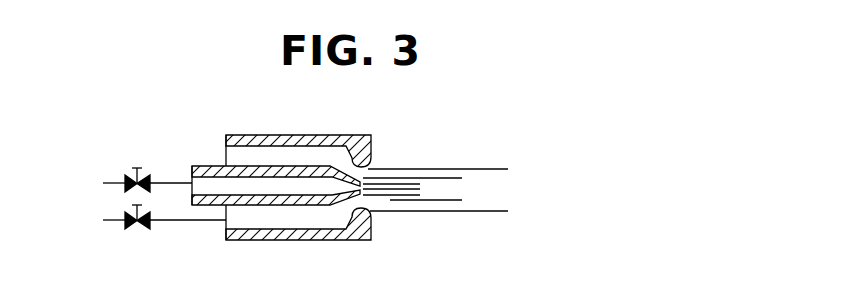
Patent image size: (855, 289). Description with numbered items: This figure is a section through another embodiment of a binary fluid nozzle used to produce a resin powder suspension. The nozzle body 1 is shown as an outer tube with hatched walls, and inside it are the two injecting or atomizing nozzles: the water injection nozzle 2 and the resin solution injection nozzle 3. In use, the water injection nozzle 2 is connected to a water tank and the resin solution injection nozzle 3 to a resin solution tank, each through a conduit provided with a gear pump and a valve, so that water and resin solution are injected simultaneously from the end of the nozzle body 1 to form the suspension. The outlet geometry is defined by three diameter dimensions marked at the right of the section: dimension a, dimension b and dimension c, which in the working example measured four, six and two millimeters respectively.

The nozzle body 1 is at (313, 133).
The water injection nozzle 2 is at (365, 169).
The resin solution injection nozzle 3 is at (362, 191).
The dimension a is at (454, 145).
The dimension b is at (498, 133).
The dimension c is at (427, 153).